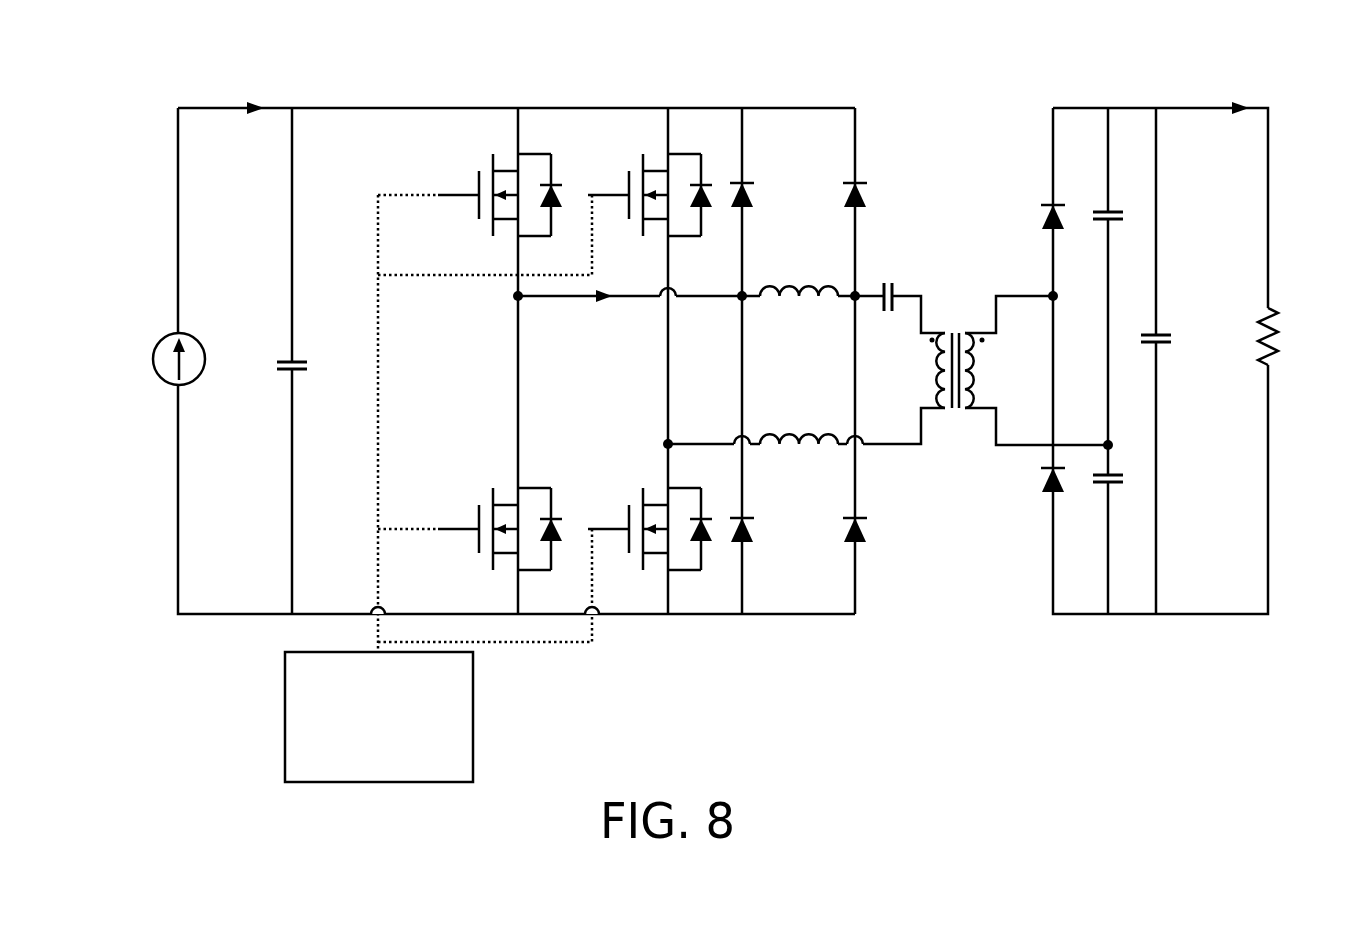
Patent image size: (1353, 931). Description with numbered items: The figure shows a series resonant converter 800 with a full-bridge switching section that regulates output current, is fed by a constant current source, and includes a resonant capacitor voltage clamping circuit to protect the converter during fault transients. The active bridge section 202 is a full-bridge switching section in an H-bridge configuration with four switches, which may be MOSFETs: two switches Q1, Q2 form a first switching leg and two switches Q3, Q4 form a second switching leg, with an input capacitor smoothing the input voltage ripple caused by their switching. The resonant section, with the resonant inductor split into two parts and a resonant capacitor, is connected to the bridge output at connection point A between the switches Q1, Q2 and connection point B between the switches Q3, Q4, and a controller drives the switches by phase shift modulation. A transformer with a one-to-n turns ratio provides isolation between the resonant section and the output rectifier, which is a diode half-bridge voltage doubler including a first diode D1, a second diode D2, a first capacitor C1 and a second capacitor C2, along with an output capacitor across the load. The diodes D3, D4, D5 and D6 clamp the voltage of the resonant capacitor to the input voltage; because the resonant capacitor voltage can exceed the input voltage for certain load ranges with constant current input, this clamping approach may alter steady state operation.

The series resonant converter 800 is at (160, 77).
The active bridge section 202 is at (379, 717).
The switch Q1 is at (497, 194).
The switch Q2 is at (497, 526).
The switch Q3 is at (644, 194).
The switch Q4 is at (642, 526).
The first diode D1 is at (1038, 231).
The second diode D2 is at (1038, 492).
The clamping diode D3 is at (754, 208).
The clamping diode D4 is at (754, 546).
The clamping diode D5 is at (842, 208).
The clamping diode D6 is at (842, 546).
The first capacitor C1 is at (1099, 200).
The second capacitor C2 is at (1100, 492).